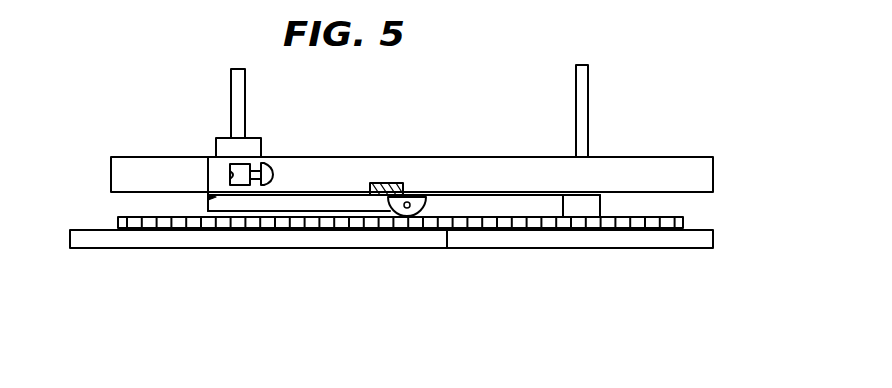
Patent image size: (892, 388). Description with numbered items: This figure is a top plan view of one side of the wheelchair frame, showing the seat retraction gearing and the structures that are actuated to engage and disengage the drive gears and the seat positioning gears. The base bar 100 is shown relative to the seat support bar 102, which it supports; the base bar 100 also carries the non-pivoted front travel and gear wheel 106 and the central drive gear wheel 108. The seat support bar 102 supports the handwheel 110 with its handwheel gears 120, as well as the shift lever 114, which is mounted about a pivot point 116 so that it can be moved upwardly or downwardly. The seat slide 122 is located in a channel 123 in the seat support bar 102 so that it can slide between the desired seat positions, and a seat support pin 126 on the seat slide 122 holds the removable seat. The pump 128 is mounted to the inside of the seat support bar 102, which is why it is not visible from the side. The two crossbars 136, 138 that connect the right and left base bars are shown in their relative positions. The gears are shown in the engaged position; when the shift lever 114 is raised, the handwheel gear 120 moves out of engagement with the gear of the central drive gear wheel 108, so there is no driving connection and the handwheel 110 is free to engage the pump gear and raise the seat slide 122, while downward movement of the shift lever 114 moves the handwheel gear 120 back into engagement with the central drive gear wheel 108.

The base bar 100 is at (673, 167).
The seat support bar 102 is at (217, 163).
The front travel and gear wheel 106 is at (684, 238).
The central drive gear wheel 108 is at (413, 220).
The handwheel 110 is at (112, 240).
The shift lever 114 is at (393, 186).
The pivot point 116 is at (208, 196).
The handwheel gears 120 is at (300, 222).
The seat slide 122 is at (242, 186).
The channel 123 is at (207, 183).
The seat support pin 126 is at (270, 180).
The pump 128 is at (250, 147).
The crossbar 136 is at (588, 100).
The crossbar 138 is at (232, 88).